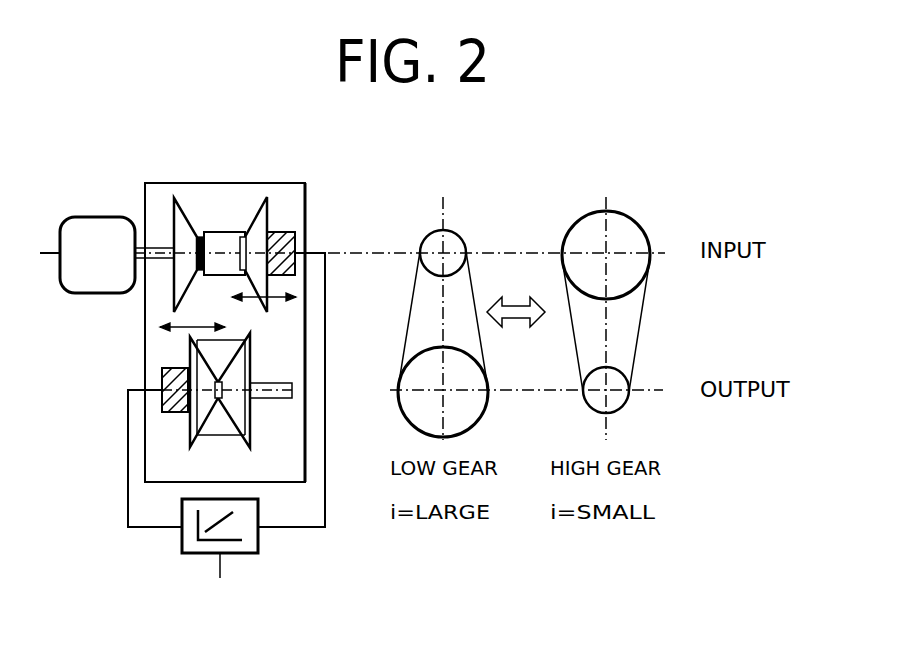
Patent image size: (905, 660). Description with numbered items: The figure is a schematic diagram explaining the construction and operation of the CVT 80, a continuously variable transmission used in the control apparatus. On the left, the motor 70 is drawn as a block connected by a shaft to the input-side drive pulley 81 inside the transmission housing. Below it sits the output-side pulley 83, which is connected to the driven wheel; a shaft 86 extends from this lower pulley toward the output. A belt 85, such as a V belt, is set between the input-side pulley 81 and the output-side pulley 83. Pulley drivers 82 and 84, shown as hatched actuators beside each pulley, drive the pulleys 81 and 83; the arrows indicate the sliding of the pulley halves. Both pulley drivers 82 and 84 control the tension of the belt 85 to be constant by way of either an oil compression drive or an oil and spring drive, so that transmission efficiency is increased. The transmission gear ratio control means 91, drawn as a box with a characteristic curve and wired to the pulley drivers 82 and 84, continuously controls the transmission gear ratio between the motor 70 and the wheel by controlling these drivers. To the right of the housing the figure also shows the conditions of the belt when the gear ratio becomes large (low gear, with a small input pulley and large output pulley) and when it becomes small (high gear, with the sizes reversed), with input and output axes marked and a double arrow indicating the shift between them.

The motor 70 is at (95, 217).
The CVT 80 is at (223, 183).
The input-side drive pulley 81 is at (195, 232).
The pulley driver 82 is at (287, 232).
The output-side pulley 83 is at (188, 448).
The pulley driver 84 is at (162, 378).
The belt 85 is at (246, 314).
The output shaft 86 is at (278, 400).
The transmission gear ratio control means 91 is at (195, 553).